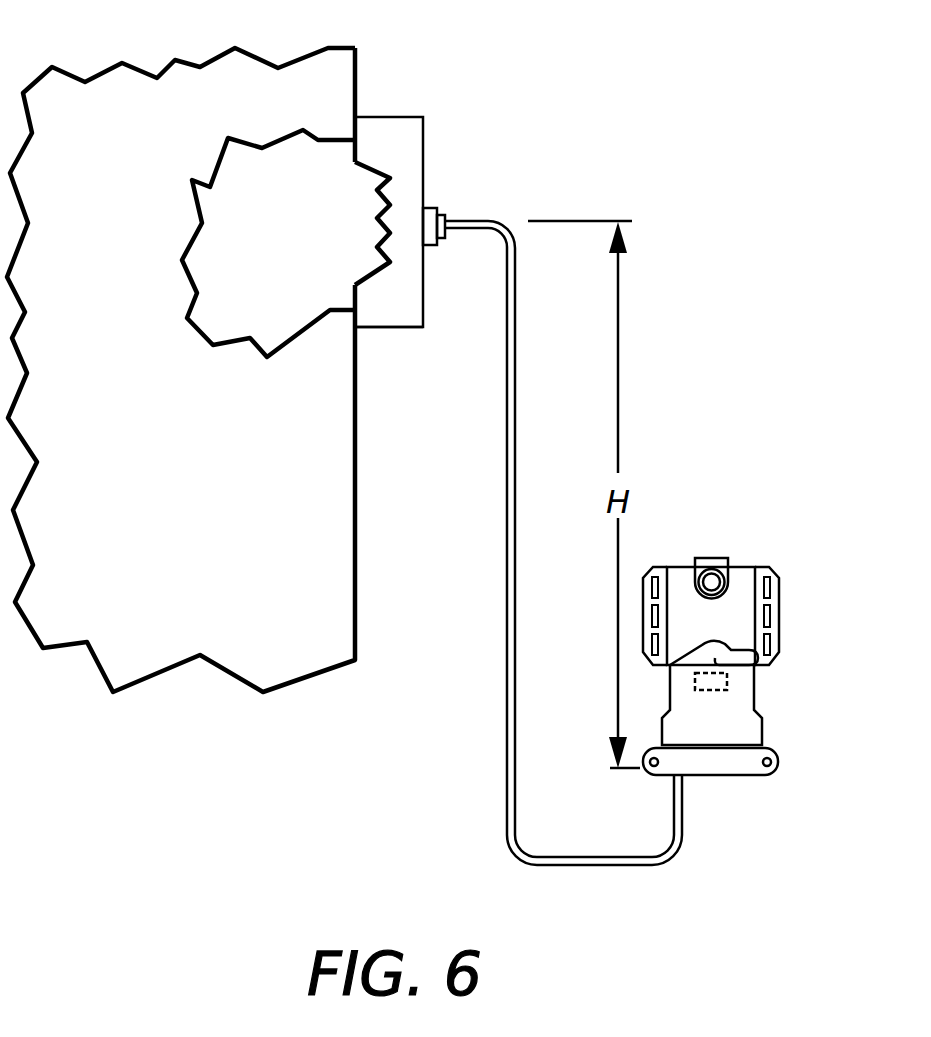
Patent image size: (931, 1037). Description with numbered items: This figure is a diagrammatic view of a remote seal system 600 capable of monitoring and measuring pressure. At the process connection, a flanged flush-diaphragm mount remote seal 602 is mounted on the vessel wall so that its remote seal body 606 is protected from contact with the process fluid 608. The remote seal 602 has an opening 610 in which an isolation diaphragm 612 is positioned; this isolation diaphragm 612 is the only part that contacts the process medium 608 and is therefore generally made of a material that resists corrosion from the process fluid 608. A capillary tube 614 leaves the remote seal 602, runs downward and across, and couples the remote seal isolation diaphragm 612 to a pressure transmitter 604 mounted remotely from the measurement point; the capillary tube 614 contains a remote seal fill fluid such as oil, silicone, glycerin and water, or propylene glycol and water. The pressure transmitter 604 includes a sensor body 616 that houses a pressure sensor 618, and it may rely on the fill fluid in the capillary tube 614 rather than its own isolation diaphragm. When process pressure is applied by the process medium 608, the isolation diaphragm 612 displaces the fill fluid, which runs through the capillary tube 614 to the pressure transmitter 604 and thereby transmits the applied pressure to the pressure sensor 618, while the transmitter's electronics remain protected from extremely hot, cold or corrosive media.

The remote seal system 600 is at (735, 113).
The remote seal 602 is at (397, 110).
The pressure transmitter 604 is at (755, 560).
The remote seal body 606 is at (397, 328).
The process fluid 608 is at (252, 270).
The opening 610 is at (376, 272).
The isolation diaphragm 612 is at (375, 219).
The capillary tube 614 is at (508, 687).
The sensor body 616 is at (760, 718).
The pressure sensor 618 is at (727, 682).